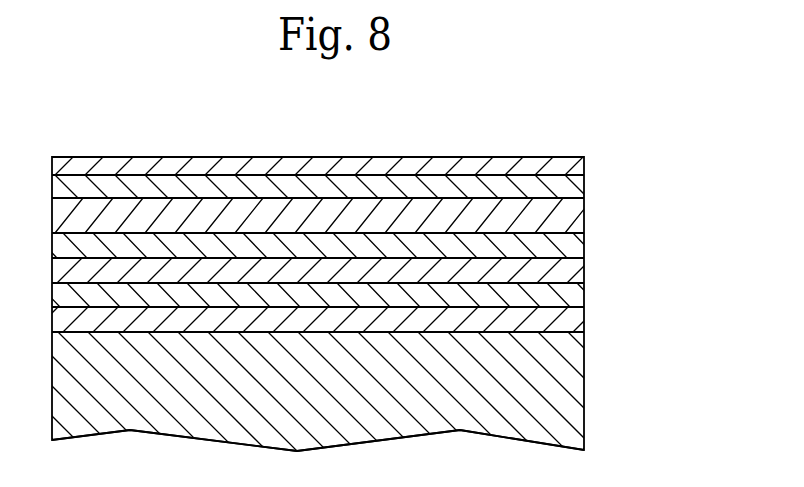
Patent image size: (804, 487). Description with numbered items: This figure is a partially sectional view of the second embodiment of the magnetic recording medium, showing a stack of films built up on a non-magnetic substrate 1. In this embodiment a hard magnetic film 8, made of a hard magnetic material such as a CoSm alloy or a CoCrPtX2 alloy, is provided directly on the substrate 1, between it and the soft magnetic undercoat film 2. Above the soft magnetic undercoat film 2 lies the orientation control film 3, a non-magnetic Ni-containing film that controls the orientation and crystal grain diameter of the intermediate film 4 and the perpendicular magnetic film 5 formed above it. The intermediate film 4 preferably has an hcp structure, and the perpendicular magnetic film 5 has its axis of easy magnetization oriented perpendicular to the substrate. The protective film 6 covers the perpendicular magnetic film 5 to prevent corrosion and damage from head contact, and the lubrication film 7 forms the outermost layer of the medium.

The non-magnetic substrate 1 is at (585, 352).
The hard magnetic film 8 is at (585, 317).
The soft magnetic undercoat film 2 is at (585, 288).
The orientation control film 3 is at (585, 262).
The intermediate film 4 is at (585, 242).
The perpendicular magnetic film 5 is at (585, 213).
The protective film 6 is at (585, 183).
The lubrication film 7 is at (585, 162).